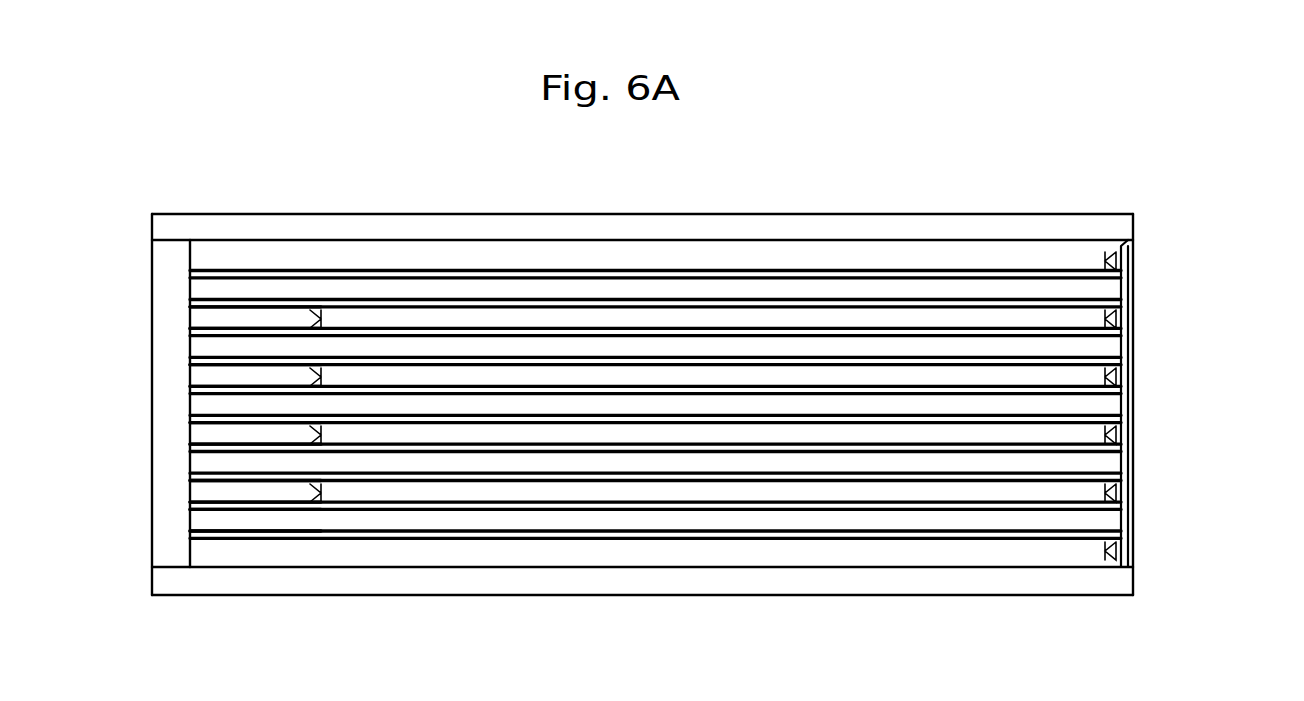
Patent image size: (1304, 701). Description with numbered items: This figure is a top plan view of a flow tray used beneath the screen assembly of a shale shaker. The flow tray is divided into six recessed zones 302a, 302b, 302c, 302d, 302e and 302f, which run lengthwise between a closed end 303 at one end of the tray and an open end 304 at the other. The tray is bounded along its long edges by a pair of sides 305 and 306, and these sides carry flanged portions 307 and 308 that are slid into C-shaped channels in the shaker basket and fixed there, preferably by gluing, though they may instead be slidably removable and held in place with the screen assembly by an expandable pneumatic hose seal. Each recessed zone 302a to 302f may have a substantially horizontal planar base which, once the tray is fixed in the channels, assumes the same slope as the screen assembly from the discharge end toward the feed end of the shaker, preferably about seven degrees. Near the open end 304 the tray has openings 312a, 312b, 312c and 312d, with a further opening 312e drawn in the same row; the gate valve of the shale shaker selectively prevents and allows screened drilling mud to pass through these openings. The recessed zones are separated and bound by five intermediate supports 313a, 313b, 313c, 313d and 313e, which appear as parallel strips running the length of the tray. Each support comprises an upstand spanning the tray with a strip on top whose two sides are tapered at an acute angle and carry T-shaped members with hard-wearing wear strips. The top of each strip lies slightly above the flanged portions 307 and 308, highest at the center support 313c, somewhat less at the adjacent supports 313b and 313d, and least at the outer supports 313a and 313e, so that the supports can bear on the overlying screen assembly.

The recessed zone 302a is at (690, 550).
The recessed zone 302b is at (540, 493).
The recessed zone 302c is at (437, 432).
The recessed zone 302d is at (570, 380).
The recessed zone 302e is at (500, 320).
The recessed zone 302f is at (397, 260).
The closed end 303 is at (1130, 373).
The open end 304 is at (152, 436).
The side 305 is at (925, 596).
The side 306 is at (955, 214).
The flanged portion 307 is at (816, 580).
The flanged portion 308 is at (835, 228).
The opening 312a is at (243, 520).
The opening 312b is at (228, 492).
The opening 312c is at (248, 440).
The opening 312d is at (270, 378).
The left connector 312e is at (247, 318).
The intermediate support 313a is at (1082, 288).
The intermediate support 313b is at (1083, 347).
The intermediate support 313c is at (1085, 407).
The intermediate support 313d is at (1082, 468).
The intermediate support 313e is at (1058, 523).